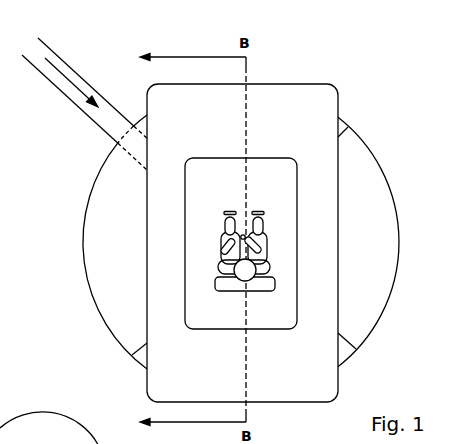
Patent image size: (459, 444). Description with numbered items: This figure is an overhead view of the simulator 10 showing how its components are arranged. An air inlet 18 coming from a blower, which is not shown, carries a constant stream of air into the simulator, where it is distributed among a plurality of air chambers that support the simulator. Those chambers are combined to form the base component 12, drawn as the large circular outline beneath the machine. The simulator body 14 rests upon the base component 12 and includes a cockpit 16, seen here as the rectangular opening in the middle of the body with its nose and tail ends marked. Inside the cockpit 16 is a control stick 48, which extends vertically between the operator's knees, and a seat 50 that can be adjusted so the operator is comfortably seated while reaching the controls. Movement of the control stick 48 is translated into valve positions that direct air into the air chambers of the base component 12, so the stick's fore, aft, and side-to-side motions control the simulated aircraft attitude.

The simulator 10 is at (409, 100).
The base component 12 is at (88, 165).
The simulator body 14 is at (160, 332).
The cockpit 16 is at (205, 158).
The air inlet 18 is at (97, 87).
The control stick 48 is at (243, 234).
The seat 50 is at (276, 280).